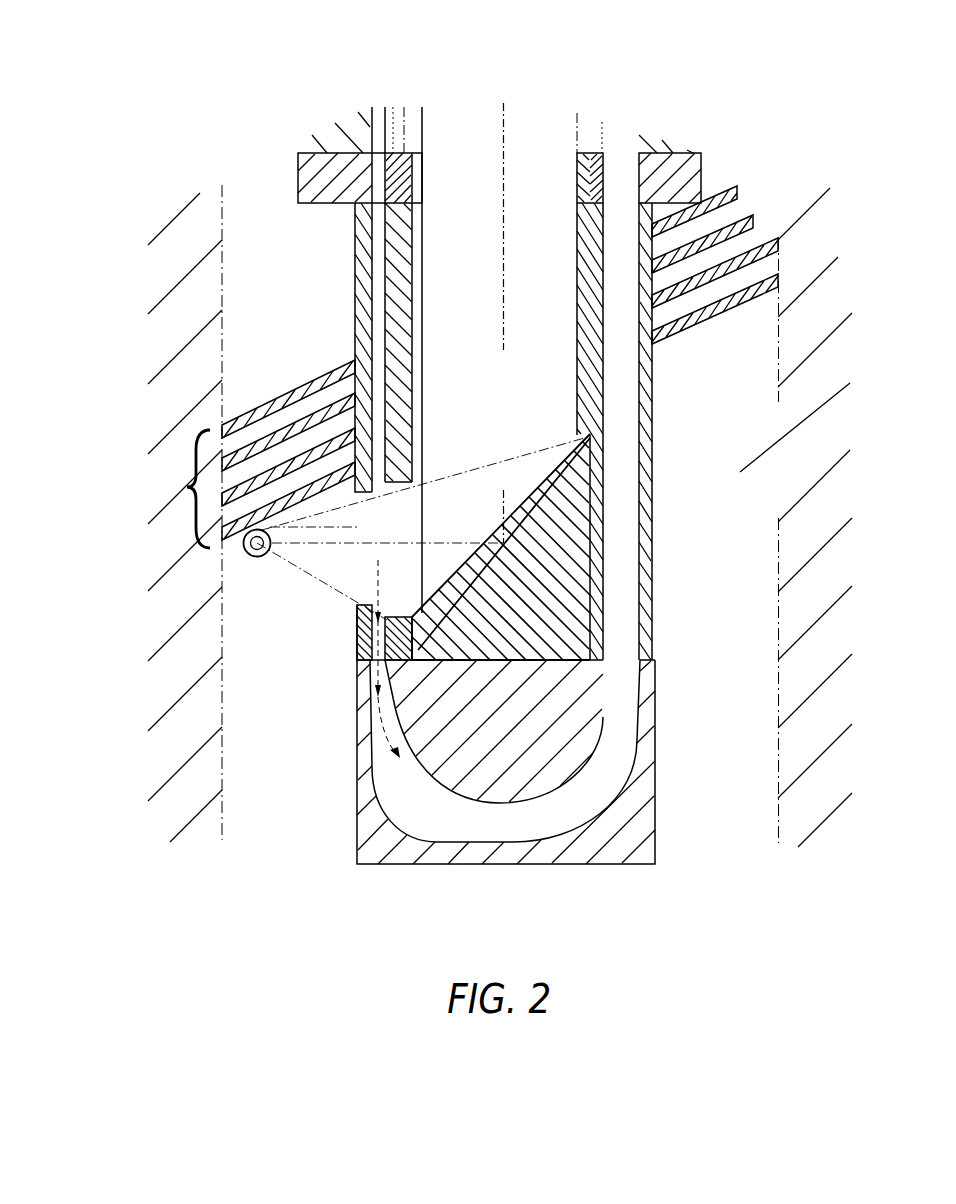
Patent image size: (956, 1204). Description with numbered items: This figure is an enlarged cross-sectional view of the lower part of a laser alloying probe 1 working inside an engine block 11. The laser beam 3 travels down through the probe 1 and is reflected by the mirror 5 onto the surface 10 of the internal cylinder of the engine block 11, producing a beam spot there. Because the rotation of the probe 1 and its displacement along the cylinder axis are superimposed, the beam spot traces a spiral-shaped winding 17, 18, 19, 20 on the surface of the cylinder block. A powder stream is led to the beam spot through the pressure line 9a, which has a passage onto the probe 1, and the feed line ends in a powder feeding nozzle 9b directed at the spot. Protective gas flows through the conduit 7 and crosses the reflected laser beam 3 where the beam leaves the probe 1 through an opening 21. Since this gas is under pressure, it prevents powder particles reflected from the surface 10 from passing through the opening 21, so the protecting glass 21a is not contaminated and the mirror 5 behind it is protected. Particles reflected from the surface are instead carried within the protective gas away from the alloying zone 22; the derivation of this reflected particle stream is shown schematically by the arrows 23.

The probe 1 is at (244, 148).
The laser beam 3 is at (503, 140).
The mirror 5 is at (540, 503).
The conduit 7 is at (377, 117).
The pressure line 9a is at (248, 555).
The powder feeding nozzle 9b is at (310, 550).
The surface of the internal cylinder 10 is at (187, 487).
The engine block 11 is at (159, 292).
The spiral-shaped winding 17 is at (780, 280).
The spiral-shaped winding 18 is at (780, 247).
The spiral-shaped winding 19 is at (757, 218).
The spiral-shaped winding 20 is at (740, 188).
The opening 21 is at (363, 553).
The protecting glass 21a is at (387, 735).
The alloying zone 22 is at (235, 528).
The arrows 23 is at (357, 733).